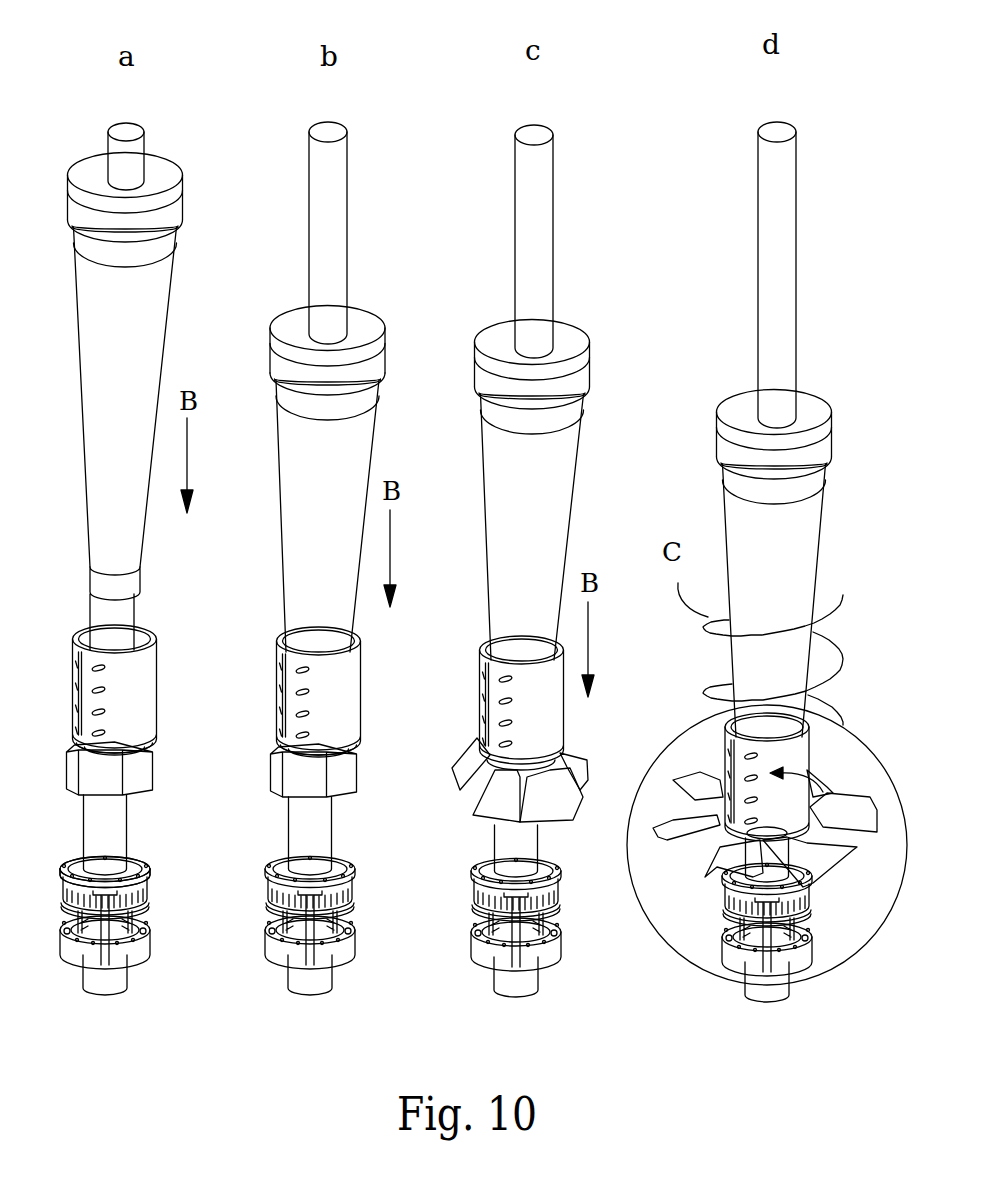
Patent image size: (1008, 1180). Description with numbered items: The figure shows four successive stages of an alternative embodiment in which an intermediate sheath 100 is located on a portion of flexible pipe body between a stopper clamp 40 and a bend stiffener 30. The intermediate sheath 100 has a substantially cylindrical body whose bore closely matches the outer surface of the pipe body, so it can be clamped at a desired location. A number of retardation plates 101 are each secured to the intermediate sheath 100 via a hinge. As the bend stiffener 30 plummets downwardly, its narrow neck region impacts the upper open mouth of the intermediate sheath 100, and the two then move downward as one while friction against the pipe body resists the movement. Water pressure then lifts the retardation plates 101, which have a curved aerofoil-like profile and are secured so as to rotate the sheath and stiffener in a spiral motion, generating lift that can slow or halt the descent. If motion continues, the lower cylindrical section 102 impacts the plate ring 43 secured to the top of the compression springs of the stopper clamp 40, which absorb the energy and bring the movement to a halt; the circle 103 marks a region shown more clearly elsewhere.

The bend stiffener 30 is at (153, 297).
The stopper clamp 40 is at (127, 902).
The plate ring 43 is at (130, 853).
The intermediate sheath 100 is at (137, 677).
The retardation plates 101 is at (140, 777).
The lower cylindrical section 102 is at (810, 853).
The circle 103 is at (663, 730).